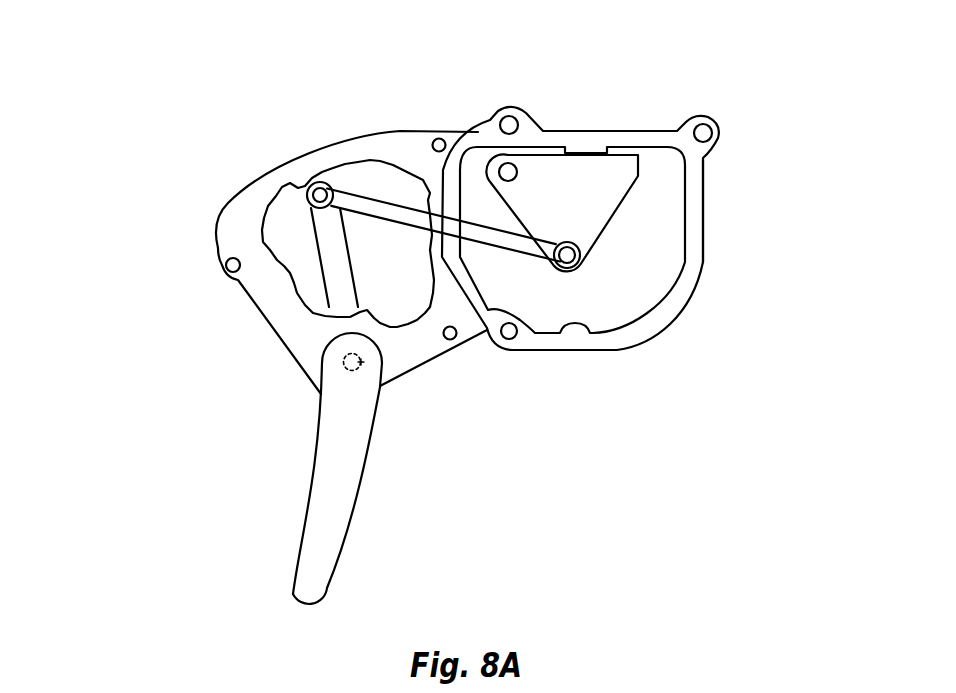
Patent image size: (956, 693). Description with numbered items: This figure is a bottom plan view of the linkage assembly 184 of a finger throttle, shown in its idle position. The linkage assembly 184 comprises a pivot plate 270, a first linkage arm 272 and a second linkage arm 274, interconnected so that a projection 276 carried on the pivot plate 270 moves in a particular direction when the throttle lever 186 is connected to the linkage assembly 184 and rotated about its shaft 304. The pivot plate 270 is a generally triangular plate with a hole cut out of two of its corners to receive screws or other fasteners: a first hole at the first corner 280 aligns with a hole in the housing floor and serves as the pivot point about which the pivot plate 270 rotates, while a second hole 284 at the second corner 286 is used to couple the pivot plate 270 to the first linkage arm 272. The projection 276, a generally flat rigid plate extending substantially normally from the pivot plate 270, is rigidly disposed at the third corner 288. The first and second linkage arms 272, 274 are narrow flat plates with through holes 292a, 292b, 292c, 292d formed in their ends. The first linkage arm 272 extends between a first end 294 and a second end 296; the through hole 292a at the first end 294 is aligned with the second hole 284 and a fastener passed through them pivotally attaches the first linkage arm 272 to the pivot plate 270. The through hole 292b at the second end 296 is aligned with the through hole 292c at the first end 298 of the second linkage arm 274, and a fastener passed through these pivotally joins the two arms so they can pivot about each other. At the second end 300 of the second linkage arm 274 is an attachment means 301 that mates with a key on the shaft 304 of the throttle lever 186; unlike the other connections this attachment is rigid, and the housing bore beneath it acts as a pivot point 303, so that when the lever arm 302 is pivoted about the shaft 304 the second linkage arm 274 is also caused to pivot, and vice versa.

The linkage assembly 184 is at (218, 133).
The throttle lever 186 is at (322, 522).
The pivot plate 270 is at (588, 157).
The first linkage arm 272 is at (403, 213).
The second linkage arm 274 is at (329, 293).
The projection 276 is at (622, 150).
The first corner 280 is at (488, 124).
The second hole 284 is at (580, 252).
The second corner 286 is at (578, 263).
The third corner 288 is at (562, 173).
The through hole 292a is at (567, 255).
The through hole 292b is at (316, 182).
The through hole 292c is at (307, 188).
The pivot pin 292d is at (346, 360).
The first end 294 is at (538, 262).
The second end 296 is at (355, 189).
The first end 298 is at (296, 221).
The second end 300 is at (320, 339).
The attachment means 301 is at (356, 356).
The lever arm 302 is at (323, 588).
The pivot point 303 is at (348, 366).
The shaft 304 is at (360, 363).